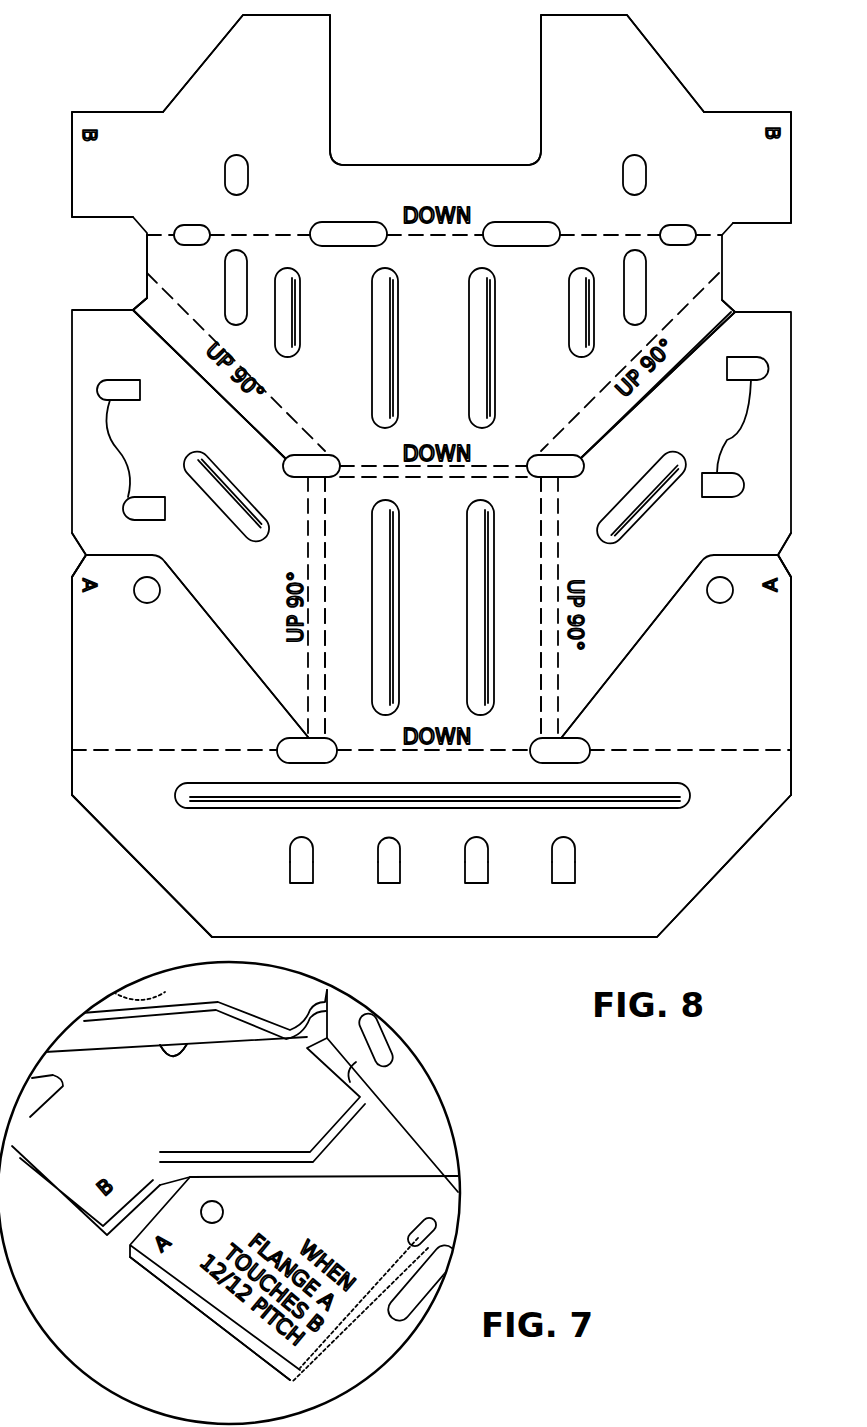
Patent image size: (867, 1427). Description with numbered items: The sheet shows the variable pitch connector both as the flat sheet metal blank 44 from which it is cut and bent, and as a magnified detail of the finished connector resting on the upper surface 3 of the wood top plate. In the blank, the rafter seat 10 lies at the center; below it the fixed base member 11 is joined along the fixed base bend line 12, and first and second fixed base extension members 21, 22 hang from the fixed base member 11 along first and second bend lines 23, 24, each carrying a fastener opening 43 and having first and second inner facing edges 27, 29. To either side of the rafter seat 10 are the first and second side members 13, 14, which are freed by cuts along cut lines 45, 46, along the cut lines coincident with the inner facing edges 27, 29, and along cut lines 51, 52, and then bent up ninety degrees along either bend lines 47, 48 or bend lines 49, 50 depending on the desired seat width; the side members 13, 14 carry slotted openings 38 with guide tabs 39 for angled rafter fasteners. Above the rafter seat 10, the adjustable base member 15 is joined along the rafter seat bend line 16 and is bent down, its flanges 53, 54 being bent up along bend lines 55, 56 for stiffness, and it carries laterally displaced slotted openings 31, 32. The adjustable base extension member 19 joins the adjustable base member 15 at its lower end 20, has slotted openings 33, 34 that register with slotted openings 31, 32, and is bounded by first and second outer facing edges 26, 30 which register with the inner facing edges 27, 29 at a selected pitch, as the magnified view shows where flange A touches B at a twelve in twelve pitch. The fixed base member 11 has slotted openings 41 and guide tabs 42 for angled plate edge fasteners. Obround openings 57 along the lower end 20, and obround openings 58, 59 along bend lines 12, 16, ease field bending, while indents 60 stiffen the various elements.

In FIG. 7, the upper surface 3 is at (138, 1356).
In FIG. 8, the rafter seat 10 is at (421, 589).
In FIG. 8, the fixed base member 11 is at (428, 934).
In FIG. 7, the fixed base member 11 is at (348, 1359).
In FIG. 8, the fixed base bend line 12 is at (373, 747).
In FIG. 8, the first side member 13 is at (211, 594).
In FIG. 7, the first side member 13 is at (413, 1105).
In FIG. 8, the second side member 14 is at (631, 587).
In FIG. 8, the adjustable base member 15 is at (421, 349).
In FIG. 7, the adjustable base member 15 is at (254, 1007).
In FIG. 8, the rafter seat bend line 16 is at (428, 480).
In FIG. 8, the adjustable base extension member 19 is at (273, 126).
In FIG. 7, the adjustable base extension member 19 is at (258, 1114).
In FIG. 8, the lower end 20 is at (265, 235).
In FIG. 8, the first fixed base extension member 21 is at (136, 679).
In FIG. 7, the first fixed base extension member 21 is at (333, 1214).
In FIG. 8, the second fixed base extension member 22 is at (708, 674).
In FIG. 8, the first bend line 23 is at (203, 750).
In FIG. 8, the second bend line 24 is at (685, 750).
In FIG. 8, the first outer facing edge 26 is at (117, 112).
In FIG. 7, the first outer facing edge 26 is at (150, 1166).
In FIG. 8, the first inner facing edge 27 is at (100, 545).
In FIG. 7, the first inner facing edge 27 is at (130, 1250).
In FIG. 8, the second inner facing edge 29 is at (751, 553).
In FIG. 8, the second outer facing edge 30 is at (738, 112).
In FIG. 8, the slotted opening 31 is at (242, 268).
In FIG. 8, the slotted opening 32 is at (640, 285).
In FIG. 8, the slotted opening 33 is at (225, 172).
In FIG. 7, the slotted opening 33 is at (183, 1062).
In FIG. 8, the slotted opening 34 is at (646, 172).
In FIG. 8, the slotted opening 38 is at (127, 497).
In FIG. 8, the guide tab 39 is at (143, 497).
In FIG. 8, the slotted opening 41 is at (378, 842).
In FIG. 8, the guide tab 42 is at (380, 860).
In FIG. 8, the fastener opening 43 is at (143, 595).
In FIG. 7, the fastener opening 43 is at (222, 1208).
In FIG. 8, the sheet metal blank 44 is at (68, 353).
In FIG. 8, the cut line 45 is at (228, 640).
In FIG. 8, the cut line 46 is at (648, 632).
In FIG. 8, the bend line 47 is at (328, 530).
In FIG. 8, the bend line 48 is at (541, 513).
In FIG. 8, the bend line 49 is at (307, 507).
In FIG. 8, the bend line 50 is at (567, 508).
In FIG. 8, the cut line 51 is at (143, 326).
In FIG. 8, the cut line 52 is at (724, 328).
In FIG. 8, the flange 53 is at (182, 322).
In FIG. 7, the flange 53 is at (112, 1030).
In FIG. 8, the flange 54 is at (600, 426).
In FIG. 8, the bend line 55 is at (270, 397).
In FIG. 8, the bend line 56 is at (594, 407).
In FIG. 8, the obround opening 57 is at (195, 225).
In FIG. 8, the obround opening 58 is at (527, 757).
In FIG. 7, the obround opening 58 is at (410, 1228).
In FIG. 8, the obround opening 59 is at (533, 455).
In FIG. 8, the indent 60 is at (297, 312).
In FIG. 7, the indent 60 is at (358, 1022).